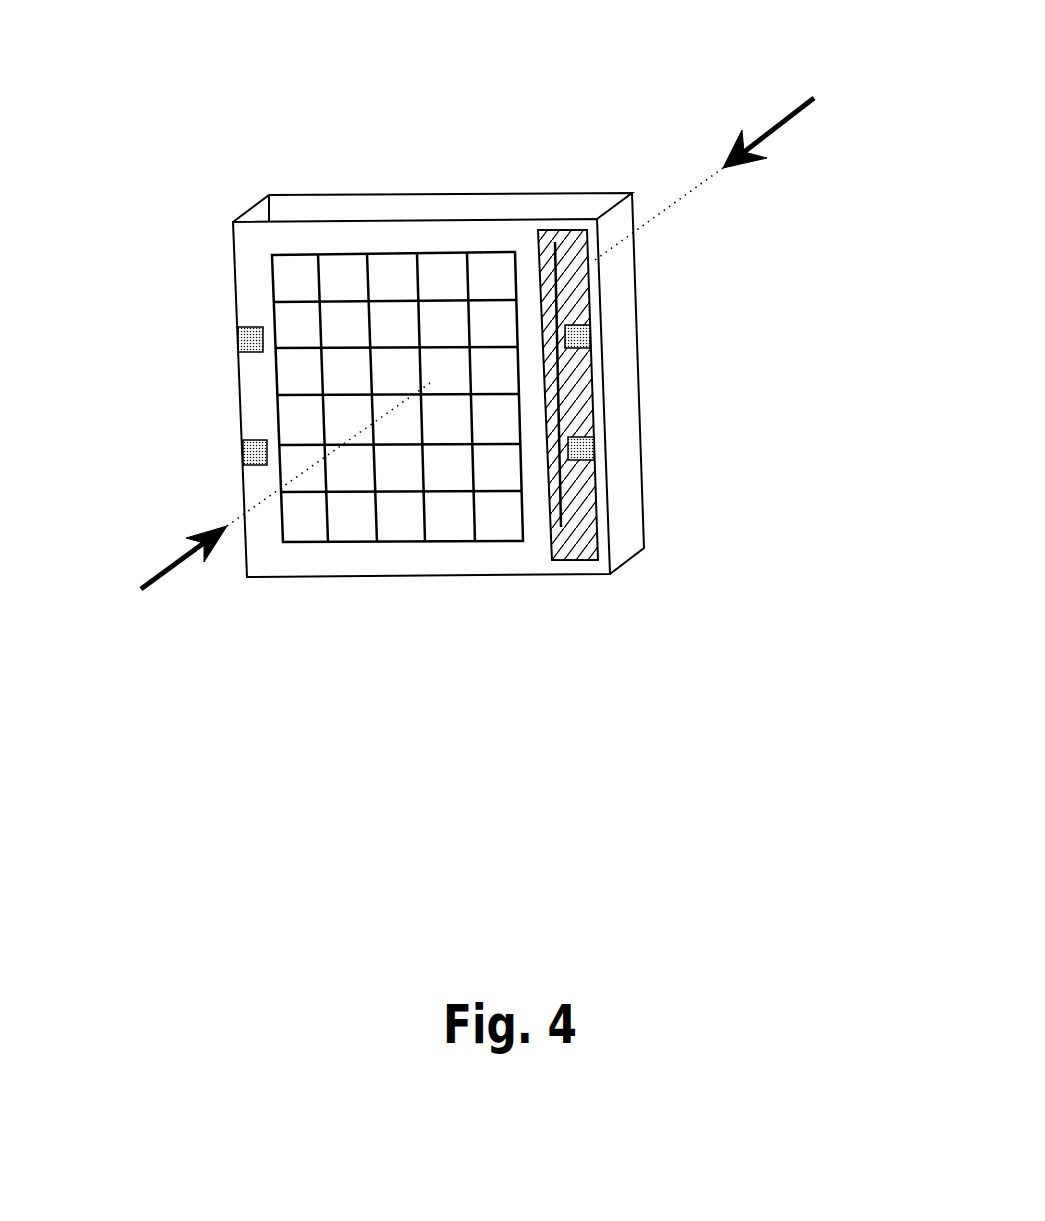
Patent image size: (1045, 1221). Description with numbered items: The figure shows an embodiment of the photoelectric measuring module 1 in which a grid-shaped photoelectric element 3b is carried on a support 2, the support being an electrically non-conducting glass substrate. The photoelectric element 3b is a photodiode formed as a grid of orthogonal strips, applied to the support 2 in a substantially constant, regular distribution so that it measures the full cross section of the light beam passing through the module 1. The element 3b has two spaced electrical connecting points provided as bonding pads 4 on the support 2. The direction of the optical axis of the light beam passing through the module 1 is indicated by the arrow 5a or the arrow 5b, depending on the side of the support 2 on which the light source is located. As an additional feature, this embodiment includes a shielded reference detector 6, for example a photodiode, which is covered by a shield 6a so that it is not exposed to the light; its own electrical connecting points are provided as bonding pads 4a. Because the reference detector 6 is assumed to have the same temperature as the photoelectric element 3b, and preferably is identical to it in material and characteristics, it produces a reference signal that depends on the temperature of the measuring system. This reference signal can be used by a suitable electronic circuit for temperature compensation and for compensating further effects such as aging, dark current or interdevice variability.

The photoelectric measuring module 1 is at (444, 396).
The support 2 is at (248, 243).
The photoelectric element 3b is at (462, 557).
The bonding pad 4 is at (176, 396).
The bonding pad of reference detector 4a is at (676, 392).
The direction of the optical axis of light beam 5a is at (798, 115).
The direction of the optical axis of light beam 5b is at (150, 598).
The shielded reference detector 6 is at (566, 512).
The shield 6a is at (577, 303).